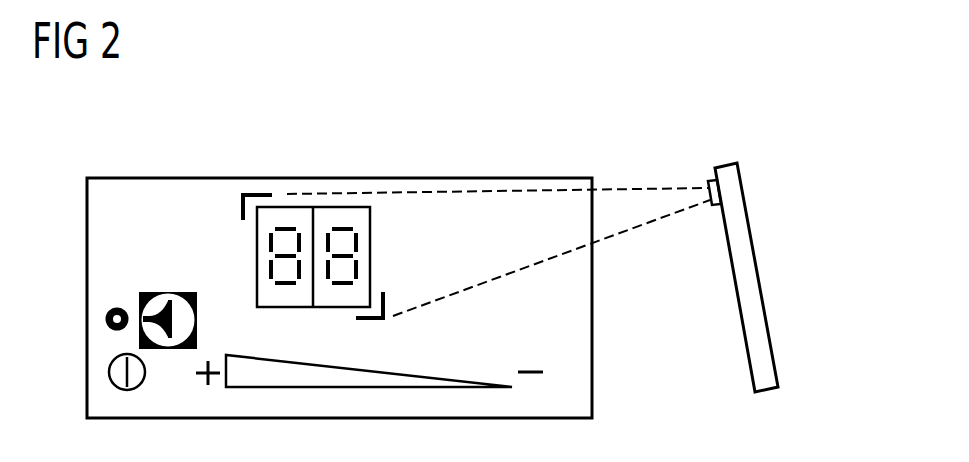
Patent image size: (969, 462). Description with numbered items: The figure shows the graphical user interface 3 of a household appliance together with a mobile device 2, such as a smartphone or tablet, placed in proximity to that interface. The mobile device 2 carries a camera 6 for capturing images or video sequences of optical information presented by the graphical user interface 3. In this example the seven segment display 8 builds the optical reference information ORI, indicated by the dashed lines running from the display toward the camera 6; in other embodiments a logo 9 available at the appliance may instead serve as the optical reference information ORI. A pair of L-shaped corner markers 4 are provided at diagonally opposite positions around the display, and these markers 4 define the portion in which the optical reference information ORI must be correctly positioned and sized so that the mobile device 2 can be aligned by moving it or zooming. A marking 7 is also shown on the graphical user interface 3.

The mobile device 2 is at (742, 225).
The graphical user interface 3 is at (121, 173).
The marker 4 is at (253, 193).
The camera 6 is at (710, 181).
The marking 7 is at (124, 298).
The seven segment display 8 is at (329, 206).
The logo 9 is at (152, 292).
The optical reference information ORI is at (370, 190).